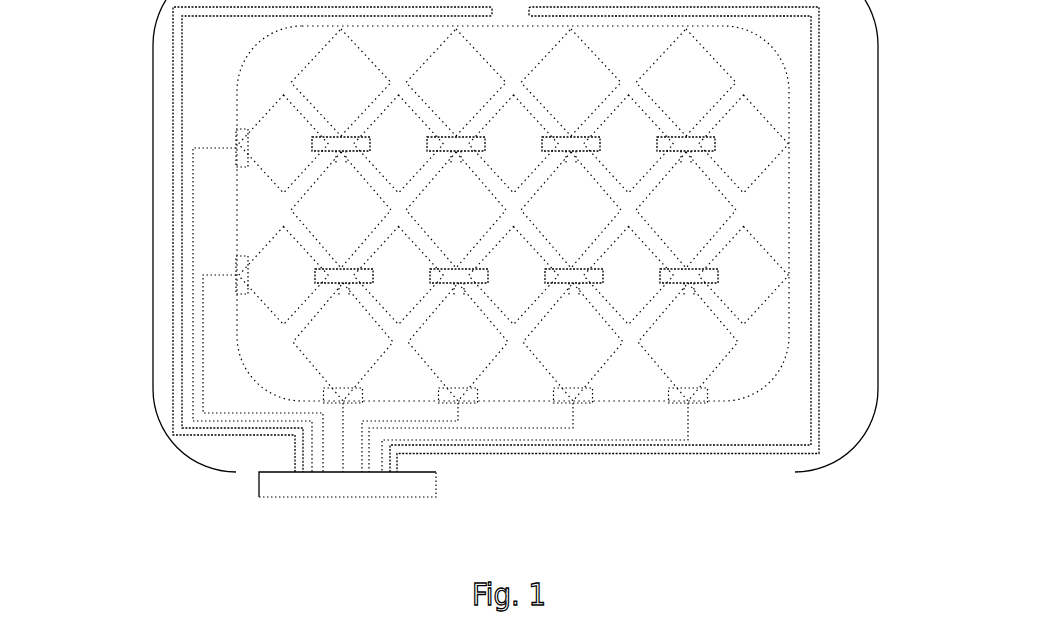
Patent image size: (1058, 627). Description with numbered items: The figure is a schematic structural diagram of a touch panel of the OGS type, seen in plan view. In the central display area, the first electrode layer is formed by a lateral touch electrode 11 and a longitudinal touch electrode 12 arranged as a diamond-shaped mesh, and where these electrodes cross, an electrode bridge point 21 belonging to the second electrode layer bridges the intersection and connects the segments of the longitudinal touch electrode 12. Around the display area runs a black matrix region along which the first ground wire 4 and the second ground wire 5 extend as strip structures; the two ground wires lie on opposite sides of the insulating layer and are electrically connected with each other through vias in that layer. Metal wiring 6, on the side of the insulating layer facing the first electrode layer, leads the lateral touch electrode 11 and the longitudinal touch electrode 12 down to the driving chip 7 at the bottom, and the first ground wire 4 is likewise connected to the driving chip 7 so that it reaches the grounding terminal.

The first ground wire 4 is at (507, 245).
The second ground wire 5 is at (820, 425).
The metal wiring 6 is at (184, 339).
The driving chip 7 is at (417, 486).
The lateral touch electrode 11 is at (775, 143).
The longitudinal touch electrode 12 is at (712, 217).
The electrode bridge point 21 is at (705, 281).